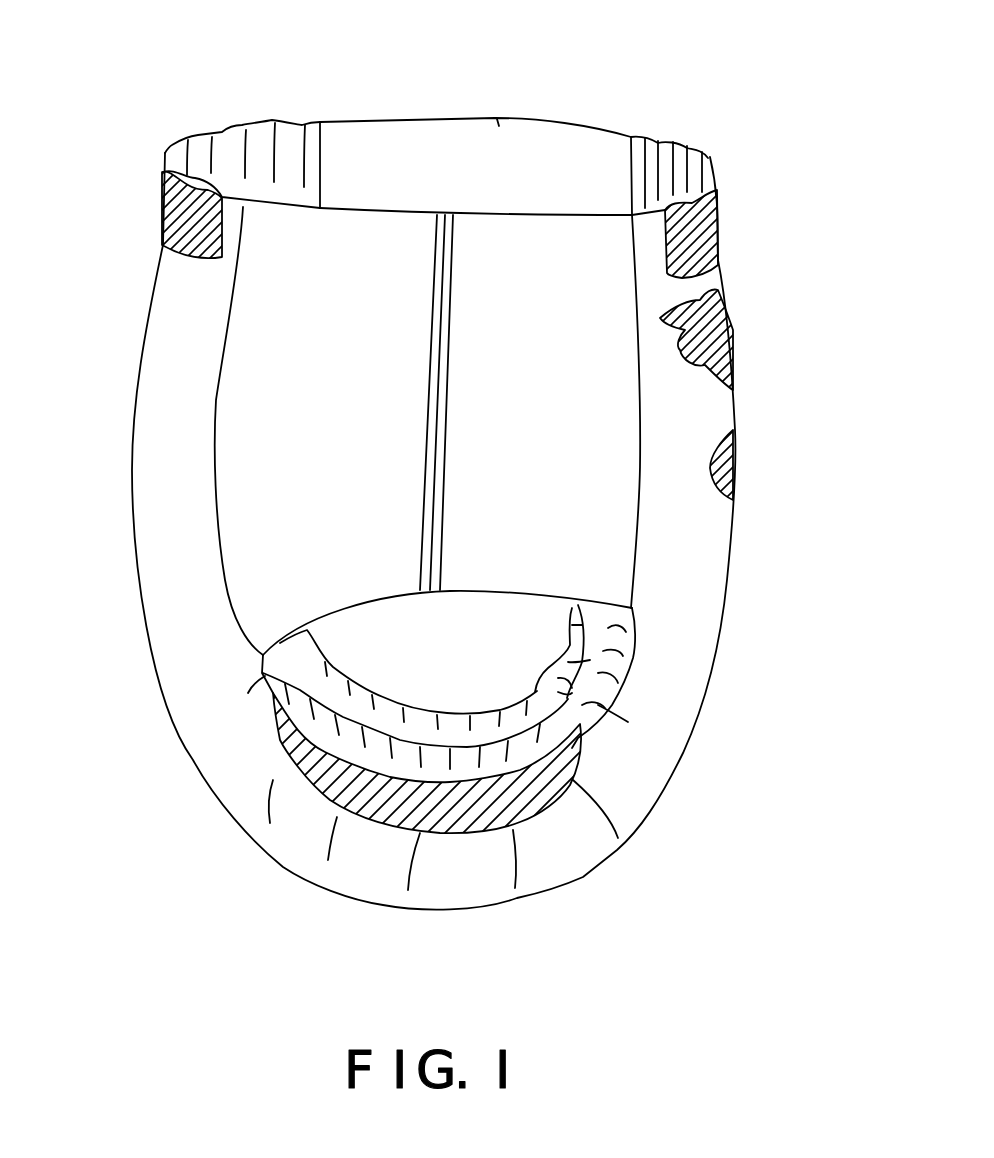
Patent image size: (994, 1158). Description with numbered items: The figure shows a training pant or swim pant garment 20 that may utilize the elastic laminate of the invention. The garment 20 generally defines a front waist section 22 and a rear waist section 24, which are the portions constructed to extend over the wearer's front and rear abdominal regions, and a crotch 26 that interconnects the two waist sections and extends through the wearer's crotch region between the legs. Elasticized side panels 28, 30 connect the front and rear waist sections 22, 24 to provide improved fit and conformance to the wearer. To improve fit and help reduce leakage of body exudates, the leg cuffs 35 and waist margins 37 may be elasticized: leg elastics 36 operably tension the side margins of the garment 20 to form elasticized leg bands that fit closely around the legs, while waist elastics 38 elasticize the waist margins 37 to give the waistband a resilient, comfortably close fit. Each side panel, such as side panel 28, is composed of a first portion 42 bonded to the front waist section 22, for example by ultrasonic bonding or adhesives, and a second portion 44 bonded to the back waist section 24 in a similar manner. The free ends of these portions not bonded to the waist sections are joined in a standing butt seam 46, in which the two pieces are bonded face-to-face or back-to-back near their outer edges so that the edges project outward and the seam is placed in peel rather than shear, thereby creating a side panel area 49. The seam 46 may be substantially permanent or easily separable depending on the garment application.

The garment 20 is at (703, 72).
The front waist section 22 is at (737, 407).
The rear waist section 24 is at (133, 404).
The crotch 26 is at (567, 850).
The side panel 28 is at (607, 536).
The side panel 30 is at (420, 150).
The leg cuffs 35 is at (297, 820).
The leg elastics 36 is at (390, 817).
The waist margins 37 is at (238, 124).
The waist elastics 38 is at (697, 220).
The first portion 42 is at (530, 556).
The second portion 44 is at (263, 593).
The standing butt seam 46 is at (450, 463).
The side panel area 49 is at (187, 520).